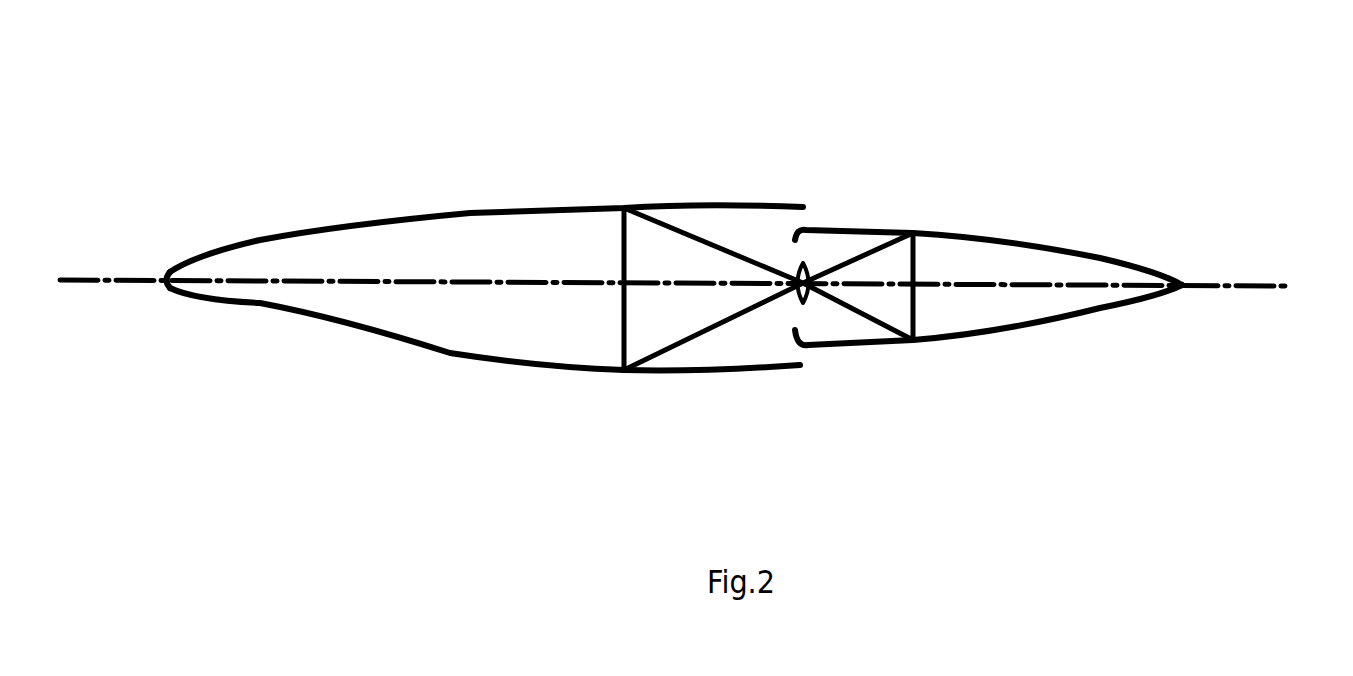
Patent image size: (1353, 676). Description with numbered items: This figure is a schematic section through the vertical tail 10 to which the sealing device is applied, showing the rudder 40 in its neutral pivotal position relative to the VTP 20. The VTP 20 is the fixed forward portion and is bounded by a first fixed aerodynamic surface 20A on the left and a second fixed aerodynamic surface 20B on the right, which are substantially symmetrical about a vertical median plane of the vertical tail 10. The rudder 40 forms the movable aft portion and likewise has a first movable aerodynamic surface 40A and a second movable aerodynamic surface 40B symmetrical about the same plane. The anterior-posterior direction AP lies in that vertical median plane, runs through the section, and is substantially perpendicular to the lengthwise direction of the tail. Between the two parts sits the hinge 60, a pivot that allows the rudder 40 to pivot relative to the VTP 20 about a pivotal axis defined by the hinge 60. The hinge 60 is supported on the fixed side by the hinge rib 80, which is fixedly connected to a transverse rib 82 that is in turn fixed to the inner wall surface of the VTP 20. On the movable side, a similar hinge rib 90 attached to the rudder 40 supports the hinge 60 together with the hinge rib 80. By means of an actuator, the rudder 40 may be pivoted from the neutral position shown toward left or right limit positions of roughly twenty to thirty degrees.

The vertical tail 10 is at (537, 48).
The VTP 20 is at (485, 286).
The first fixed aerodynamic surface 20A is at (457, 365).
The second fixed aerodynamic surface 20B is at (531, 205).
The rudder 40 is at (990, 284).
The first movable aerodynamic surface 40A is at (983, 338).
The second movable aerodynamic surface 40B is at (1070, 245).
The hinge 60 is at (806, 262).
The hinge rib 80 is at (632, 337).
The transverse rib 82 is at (620, 332).
The hinge rib 90 is at (862, 258).
The anterior-posterior direction AP is at (700, 262).